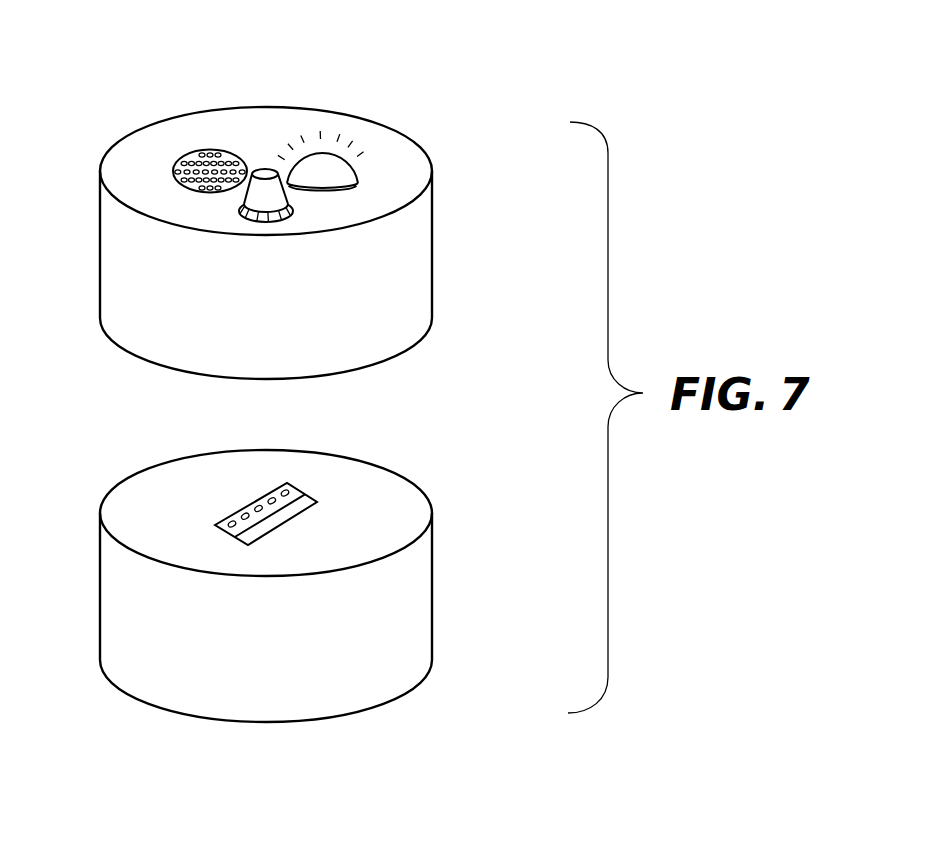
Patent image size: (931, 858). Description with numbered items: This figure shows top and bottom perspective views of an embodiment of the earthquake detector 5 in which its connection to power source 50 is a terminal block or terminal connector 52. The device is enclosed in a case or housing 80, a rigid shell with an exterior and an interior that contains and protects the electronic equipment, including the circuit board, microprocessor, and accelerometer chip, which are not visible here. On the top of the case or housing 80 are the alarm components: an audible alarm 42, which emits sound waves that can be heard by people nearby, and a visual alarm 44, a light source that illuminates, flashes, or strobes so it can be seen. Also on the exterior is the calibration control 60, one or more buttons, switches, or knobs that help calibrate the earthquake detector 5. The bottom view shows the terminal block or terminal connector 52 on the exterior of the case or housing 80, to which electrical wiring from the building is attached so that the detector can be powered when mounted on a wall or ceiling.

The earthquake detector 5 is at (316, 419).
The audible alarm 42 is at (207, 157).
The visual alarm 44 is at (325, 165).
The calibration control 60 is at (243, 215).
The case or housing 80 is at (433, 236).
The connection to power source 50 is at (318, 485).
The terminal block or terminal connector 52 is at (288, 488).